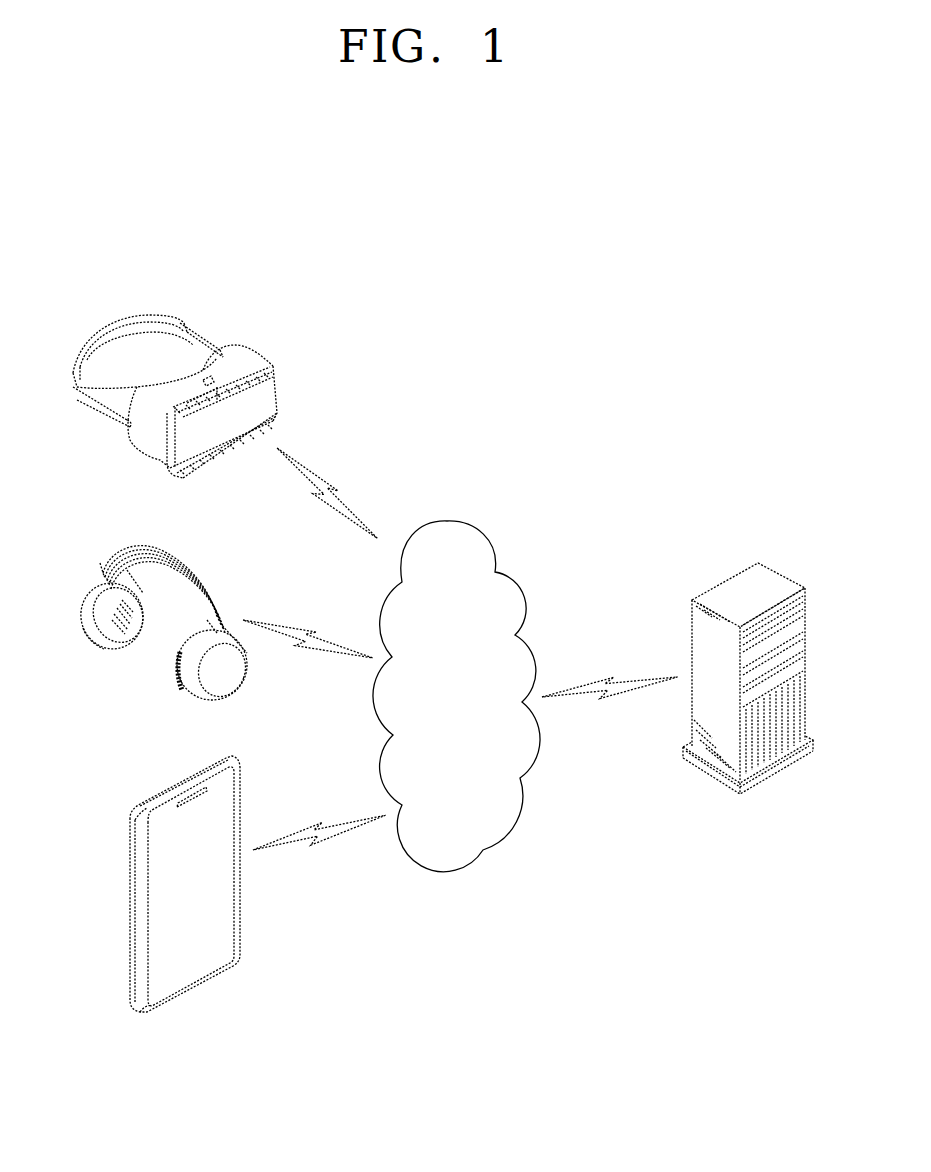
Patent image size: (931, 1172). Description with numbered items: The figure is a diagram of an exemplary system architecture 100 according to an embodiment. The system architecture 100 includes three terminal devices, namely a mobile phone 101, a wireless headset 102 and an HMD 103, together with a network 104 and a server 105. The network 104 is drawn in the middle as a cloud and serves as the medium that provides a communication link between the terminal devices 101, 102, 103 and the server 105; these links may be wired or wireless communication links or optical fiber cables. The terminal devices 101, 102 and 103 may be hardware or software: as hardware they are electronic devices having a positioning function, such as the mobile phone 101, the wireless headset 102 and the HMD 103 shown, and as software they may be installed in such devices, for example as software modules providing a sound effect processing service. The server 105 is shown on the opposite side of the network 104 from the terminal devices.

The system architecture 100 is at (660, 376).
The mobile phone 101 is at (147, 791).
The wireless headset 102 is at (93, 577).
The HMD 103 is at (246, 351).
The network 104 is at (456, 696).
The server 105 is at (780, 572).